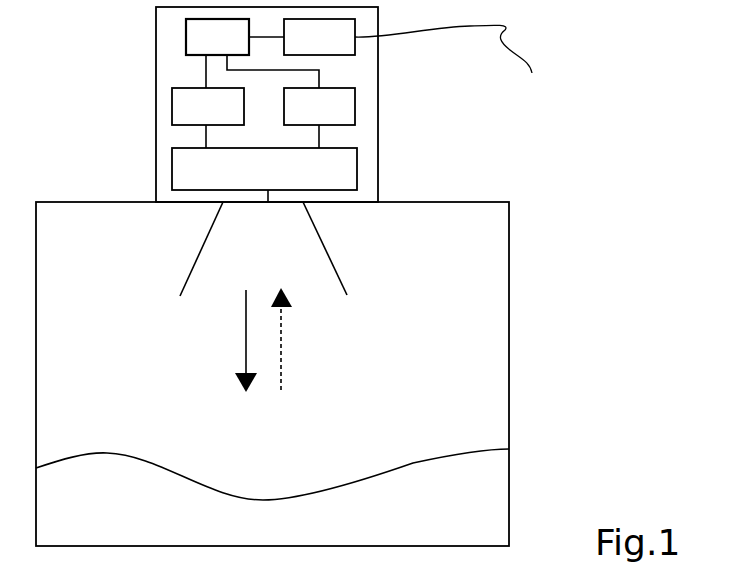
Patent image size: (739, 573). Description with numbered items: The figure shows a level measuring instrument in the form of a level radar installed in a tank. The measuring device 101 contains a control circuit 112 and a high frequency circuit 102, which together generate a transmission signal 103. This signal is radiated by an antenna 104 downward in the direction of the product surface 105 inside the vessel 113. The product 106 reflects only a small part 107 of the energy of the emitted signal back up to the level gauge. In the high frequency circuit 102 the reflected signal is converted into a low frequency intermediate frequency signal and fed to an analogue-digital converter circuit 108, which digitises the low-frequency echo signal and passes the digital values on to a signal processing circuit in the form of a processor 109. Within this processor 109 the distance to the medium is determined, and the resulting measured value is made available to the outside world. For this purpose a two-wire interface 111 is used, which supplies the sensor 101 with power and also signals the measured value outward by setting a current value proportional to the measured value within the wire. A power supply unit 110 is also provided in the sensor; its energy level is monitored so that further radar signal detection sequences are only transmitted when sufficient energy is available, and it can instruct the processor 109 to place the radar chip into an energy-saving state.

The measuring device 101 is at (378, 173).
The high frequency circuit 102 is at (172, 165).
The transmission signal 103 is at (246, 333).
The antenna 104 is at (326, 247).
The product surface 105 is at (427, 458).
The product 106 is at (509, 463).
The reflected signal part 107 is at (283, 347).
The analogue-digital converter circuit 108 is at (172, 105).
The processor 109 is at (175, 33).
The power supply unit 110 is at (355, 50).
The two-wire interface 111 is at (455, 67).
The control circuit 112 is at (355, 107).
The vessel 113 is at (509, 303).